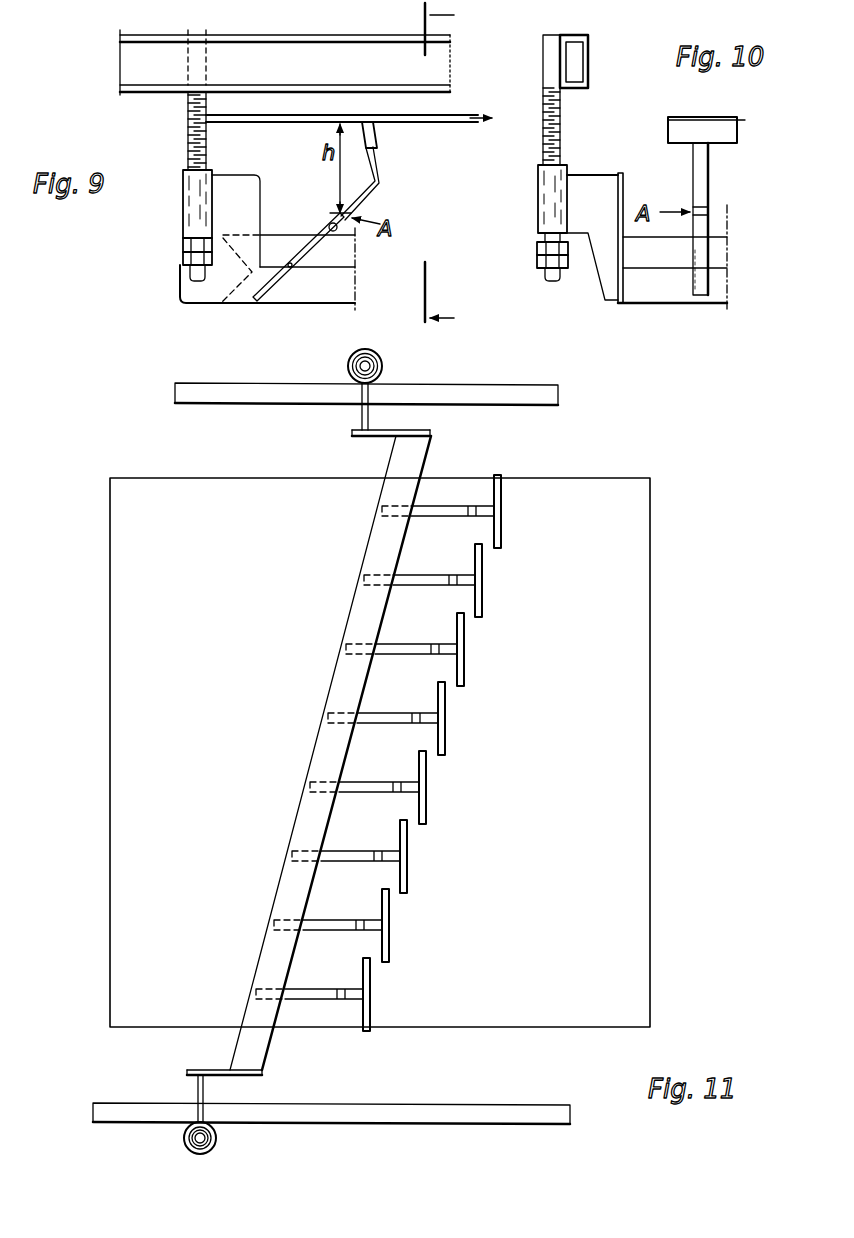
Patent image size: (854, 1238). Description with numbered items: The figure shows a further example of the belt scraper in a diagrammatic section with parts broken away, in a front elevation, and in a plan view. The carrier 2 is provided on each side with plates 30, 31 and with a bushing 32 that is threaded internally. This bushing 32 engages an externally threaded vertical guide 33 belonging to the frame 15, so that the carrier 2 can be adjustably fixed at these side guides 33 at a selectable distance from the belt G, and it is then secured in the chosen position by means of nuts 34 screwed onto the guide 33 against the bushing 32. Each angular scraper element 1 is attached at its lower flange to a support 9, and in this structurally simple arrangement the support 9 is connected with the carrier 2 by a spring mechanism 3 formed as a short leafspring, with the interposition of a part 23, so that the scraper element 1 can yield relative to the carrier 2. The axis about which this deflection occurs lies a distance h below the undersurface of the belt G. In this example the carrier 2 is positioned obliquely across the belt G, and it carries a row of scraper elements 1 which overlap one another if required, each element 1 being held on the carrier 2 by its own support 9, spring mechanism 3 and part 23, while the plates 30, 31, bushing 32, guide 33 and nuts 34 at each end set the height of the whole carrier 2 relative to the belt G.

In FIG. 9, the scraper element 1 is at (376, 138).
In FIG. 10, the scraper element 1 is at (698, 124).
In FIG. 11, the scraper element 1 is at (483, 577).
In FIG. 9, the carrier 2 is at (292, 297).
In FIG. 10, the carrier 2 is at (633, 297).
In FIG. 11, the carrier 2 is at (372, 547).
In FIG. 9, the spring mechanism 3 is at (330, 226).
In FIG. 10, the spring mechanism 3 is at (705, 210).
In FIG. 9, the support 9 is at (374, 188).
In FIG. 10, the support 9 is at (703, 172).
In FIG. 9, the frame 15 is at (241, 45).
In FIG. 10, the frame 15 is at (590, 53).
In FIG. 9, the part 23 is at (320, 246).
In FIG. 10, the part 23 is at (703, 257).
In FIG. 9, the plate 30 is at (243, 184).
In FIG. 10, the plate 30 is at (625, 203).
In FIG. 11, the plate 30 is at (422, 432).
In FIG. 10, the plate 31 is at (592, 178).
In FIG. 11, the plate 31 is at (362, 419).
In FIG. 9, the bushing 32 is at (186, 193).
In FIG. 10, the bushing 32 is at (553, 198).
In FIG. 11, the bushing 32 is at (213, 1144).
In FIG. 9, the vertical guide 33 is at (188, 141).
In FIG. 10, the vertical guide 33 is at (562, 131).
In FIG. 11, the vertical guide 33 is at (190, 1140).
In FIG. 9, the nuts 34 is at (183, 259).
In FIG. 10, the nuts 34 is at (538, 260).
In FIG. 11, the belt G is at (110, 527).